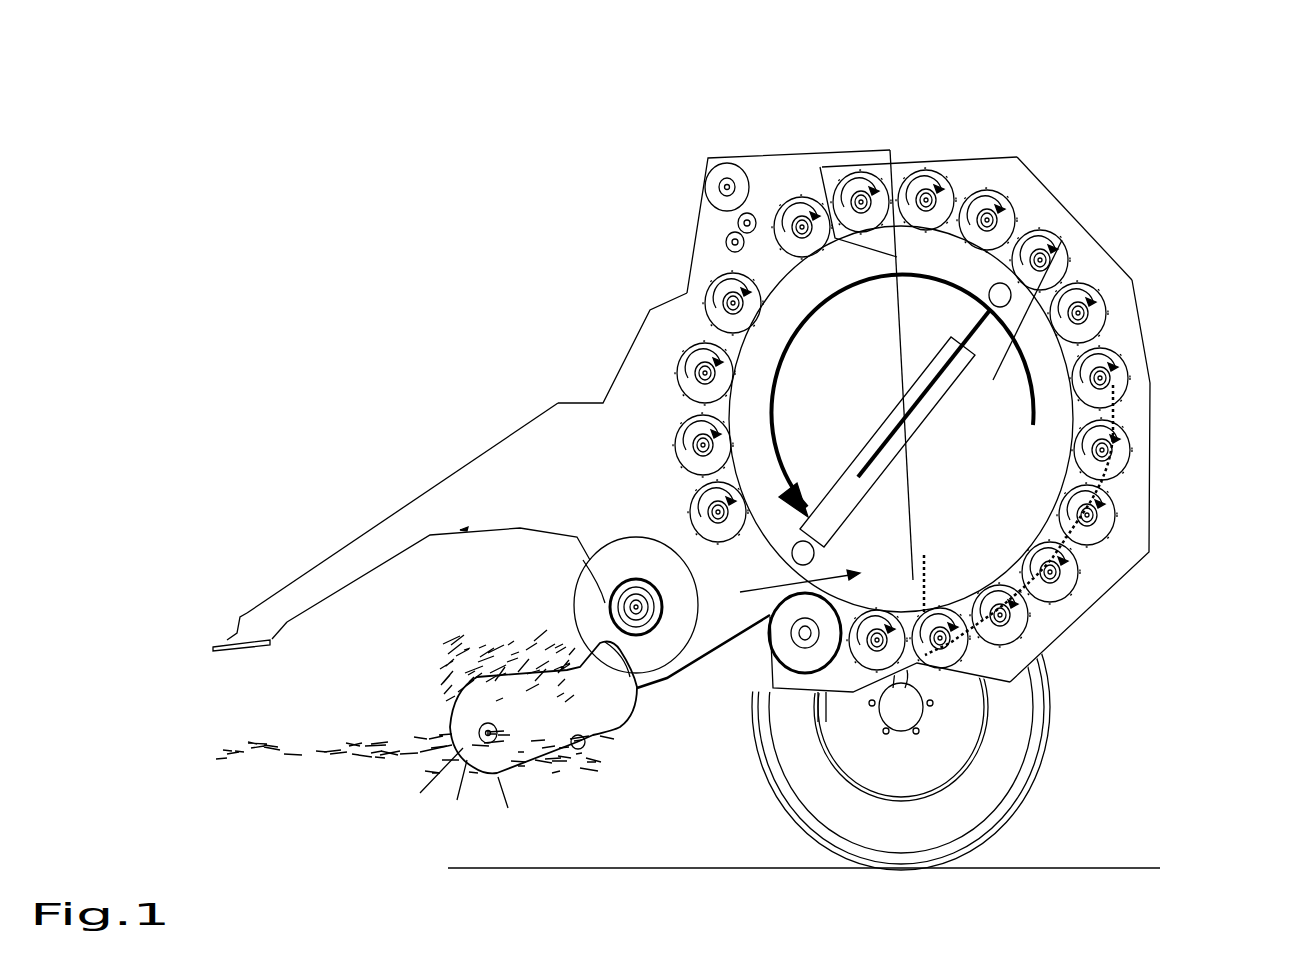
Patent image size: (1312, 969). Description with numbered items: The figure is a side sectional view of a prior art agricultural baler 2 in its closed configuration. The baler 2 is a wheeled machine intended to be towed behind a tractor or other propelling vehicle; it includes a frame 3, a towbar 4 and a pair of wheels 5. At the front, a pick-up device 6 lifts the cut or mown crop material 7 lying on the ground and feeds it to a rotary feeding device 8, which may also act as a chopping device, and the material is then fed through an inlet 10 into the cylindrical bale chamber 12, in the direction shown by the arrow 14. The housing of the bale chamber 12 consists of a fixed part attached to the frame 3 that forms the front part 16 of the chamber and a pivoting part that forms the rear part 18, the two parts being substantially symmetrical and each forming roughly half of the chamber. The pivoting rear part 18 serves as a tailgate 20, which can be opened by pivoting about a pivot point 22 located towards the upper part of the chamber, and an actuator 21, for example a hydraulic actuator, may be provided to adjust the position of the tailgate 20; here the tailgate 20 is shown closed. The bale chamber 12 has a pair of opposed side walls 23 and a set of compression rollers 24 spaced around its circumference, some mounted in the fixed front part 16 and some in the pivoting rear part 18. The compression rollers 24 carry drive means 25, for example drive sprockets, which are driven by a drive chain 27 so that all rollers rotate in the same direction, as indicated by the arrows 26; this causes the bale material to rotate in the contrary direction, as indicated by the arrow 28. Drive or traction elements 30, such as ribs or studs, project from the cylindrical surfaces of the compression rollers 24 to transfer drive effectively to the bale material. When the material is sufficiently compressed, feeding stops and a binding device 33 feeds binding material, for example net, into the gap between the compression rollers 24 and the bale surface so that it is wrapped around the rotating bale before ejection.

The agricultural baler 2 is at (565, 312).
The frame 3 is at (627, 370).
The towbar 4 is at (390, 533).
The wheels 5 is at (1043, 753).
The pick-up device 6 is at (470, 748).
The crop material 7 is at (350, 735).
The rotary feeding device 8 is at (573, 607).
The inlet 10 is at (731, 569).
The bale chamber 12 is at (808, 456).
The arrow 14 is at (778, 640).
The front part of the bale chamber 16 is at (697, 230).
The rear part of the bale chamber 18 is at (1130, 267).
The tailgate 20 is at (1150, 442).
The actuator 21 is at (977, 322).
The pivot point 22 is at (861, 200).
The side walls 23 is at (910, 507).
The compression rollers 24 is at (677, 383).
The drive means 25 is at (1097, 515).
The arrows 26 is at (926, 200).
The drive chain 27 is at (1077, 543).
The arrow 28 is at (802, 330).
The drive or traction elements 30 is at (1072, 383).
The binding device 33 is at (692, 142).